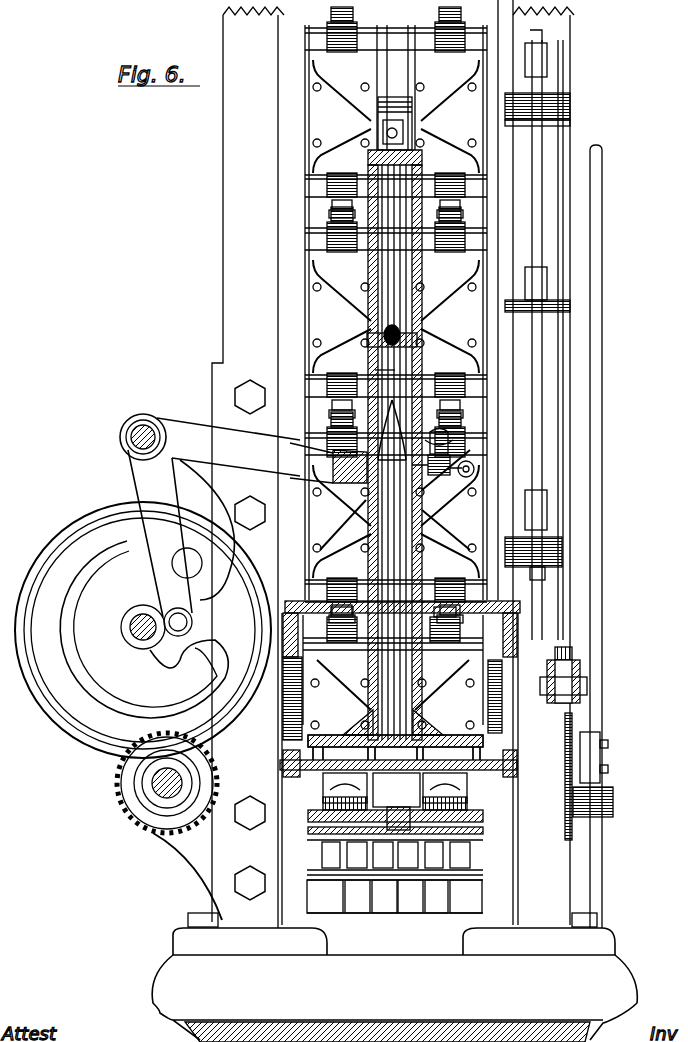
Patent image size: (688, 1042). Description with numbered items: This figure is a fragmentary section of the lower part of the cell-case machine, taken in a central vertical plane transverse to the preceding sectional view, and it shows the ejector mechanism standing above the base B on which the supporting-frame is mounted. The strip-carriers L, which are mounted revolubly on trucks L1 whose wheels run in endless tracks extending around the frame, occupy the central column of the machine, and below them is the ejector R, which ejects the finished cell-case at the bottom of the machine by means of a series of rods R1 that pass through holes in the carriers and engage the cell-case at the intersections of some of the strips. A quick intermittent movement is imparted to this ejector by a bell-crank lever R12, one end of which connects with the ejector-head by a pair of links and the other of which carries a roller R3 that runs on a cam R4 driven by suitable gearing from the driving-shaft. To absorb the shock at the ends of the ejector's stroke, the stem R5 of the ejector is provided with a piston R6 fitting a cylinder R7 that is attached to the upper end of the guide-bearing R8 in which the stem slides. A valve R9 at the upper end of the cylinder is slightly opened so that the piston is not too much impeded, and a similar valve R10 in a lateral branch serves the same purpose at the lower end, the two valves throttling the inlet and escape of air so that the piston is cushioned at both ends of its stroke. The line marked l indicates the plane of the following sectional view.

The base B is at (394, 985).
The strip-carriers L is at (306, 843).
The trucks L1 is at (395, 383).
The ejector R is at (398, 745).
The rods R1 is at (420, 793).
The roller R3 is at (192, 622).
The cam R4 is at (143, 630).
The stem R5 is at (420, 523).
The piston R6 is at (375, 370).
The cylinder R7 is at (372, 126).
The guide-bearing R8 is at (365, 522).
The valve R9 is at (446, 479).
The valve R10 is at (452, 440).
The bell-crank lever R12 is at (250, 445).
The lever l is at (335, 275).